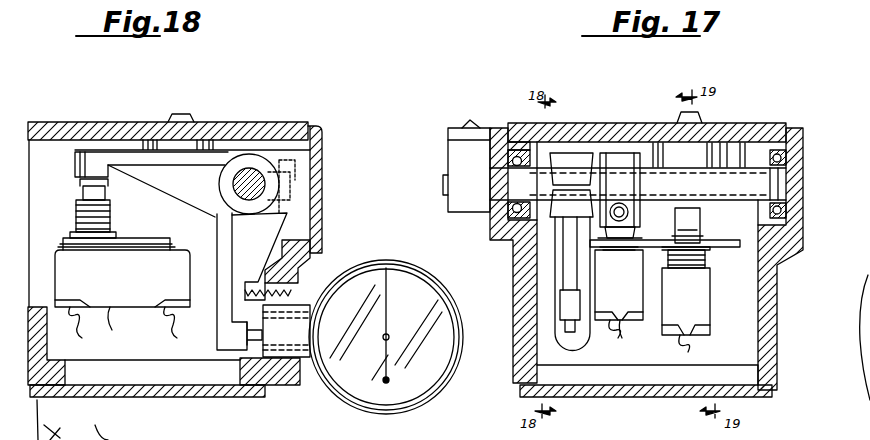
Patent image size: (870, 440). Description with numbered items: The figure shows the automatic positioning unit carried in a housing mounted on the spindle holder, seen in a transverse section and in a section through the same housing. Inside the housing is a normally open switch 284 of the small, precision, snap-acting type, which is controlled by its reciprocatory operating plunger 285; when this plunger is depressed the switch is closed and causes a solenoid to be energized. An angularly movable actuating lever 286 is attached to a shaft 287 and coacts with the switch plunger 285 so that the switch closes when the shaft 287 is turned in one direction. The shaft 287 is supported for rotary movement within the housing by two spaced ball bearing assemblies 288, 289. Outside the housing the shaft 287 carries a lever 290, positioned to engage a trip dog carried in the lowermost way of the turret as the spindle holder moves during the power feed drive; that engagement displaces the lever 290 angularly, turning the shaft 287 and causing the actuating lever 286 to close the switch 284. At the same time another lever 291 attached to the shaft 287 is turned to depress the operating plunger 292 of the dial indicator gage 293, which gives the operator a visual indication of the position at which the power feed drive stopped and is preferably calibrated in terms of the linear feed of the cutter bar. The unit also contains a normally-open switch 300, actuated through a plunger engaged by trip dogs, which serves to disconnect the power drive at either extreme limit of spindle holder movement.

In FIG. 18, the normally open switch 284 is at (111, 302).
In FIG. 17, the normally open switch 284 is at (608, 300).
In FIG. 18, the operating plunger 285 is at (66, 190).
In FIG. 18, the actuating lever 286 is at (117, 160).
In FIG. 17, the actuating lever 286 is at (613, 205).
In FIG. 18, the shaft 287 is at (249, 176).
In FIG. 17, the shaft 287 is at (703, 180).
In FIG. 17, the ball bearing assembly 288 is at (522, 150).
In FIG. 17, the ball bearing assembly 289 is at (790, 157).
In FIG. 17, the lever 290 is at (459, 130).
In FIG. 18, the lever 291 is at (220, 328).
In FIG. 17, the lever 291 is at (560, 278).
In FIG. 18, the operating plunger 292 is at (262, 348).
In FIG. 18, the dial indicator gage 293 is at (357, 383).
In FIG. 17, the normally-open switch 300 is at (692, 306).